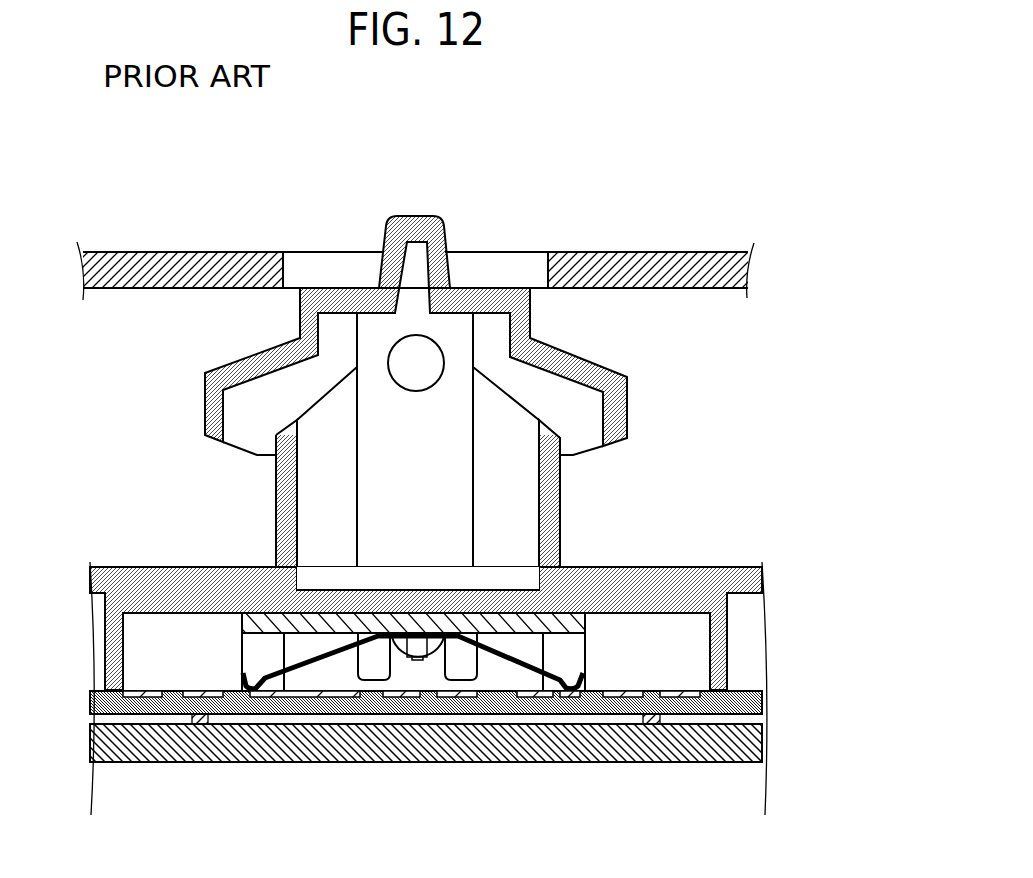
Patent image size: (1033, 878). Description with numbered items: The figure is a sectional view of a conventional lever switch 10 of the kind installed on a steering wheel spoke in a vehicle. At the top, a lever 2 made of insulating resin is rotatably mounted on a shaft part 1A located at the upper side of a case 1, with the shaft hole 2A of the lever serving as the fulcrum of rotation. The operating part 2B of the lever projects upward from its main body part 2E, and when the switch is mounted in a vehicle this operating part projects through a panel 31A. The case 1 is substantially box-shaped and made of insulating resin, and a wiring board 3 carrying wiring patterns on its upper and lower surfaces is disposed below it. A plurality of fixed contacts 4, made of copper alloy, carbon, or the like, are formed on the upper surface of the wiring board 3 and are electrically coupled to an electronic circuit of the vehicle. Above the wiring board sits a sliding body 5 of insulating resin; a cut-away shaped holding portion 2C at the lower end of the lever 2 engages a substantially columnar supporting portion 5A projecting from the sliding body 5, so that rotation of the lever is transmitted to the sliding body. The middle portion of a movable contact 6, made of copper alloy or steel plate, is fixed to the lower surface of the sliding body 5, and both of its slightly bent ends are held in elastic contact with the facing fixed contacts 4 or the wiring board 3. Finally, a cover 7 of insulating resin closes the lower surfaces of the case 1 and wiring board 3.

The lever switch 10 is at (460, 198).
The panel 31A is at (638, 265).
The lever 2 is at (403, 364).
The shaft hole 2A is at (402, 265).
The operating part 2B is at (412, 228).
The shaft part 1A is at (422, 358).
The main body part 2E is at (613, 413).
The case 1 is at (730, 573).
The sliding body 5 is at (540, 604).
The holding portion 2C is at (377, 742).
The supporting portion 5A is at (413, 663).
The movable contact 6 is at (510, 665).
The fixed contacts 4 is at (583, 700).
The wiring board 3 is at (690, 706).
The cover 7 is at (152, 742).